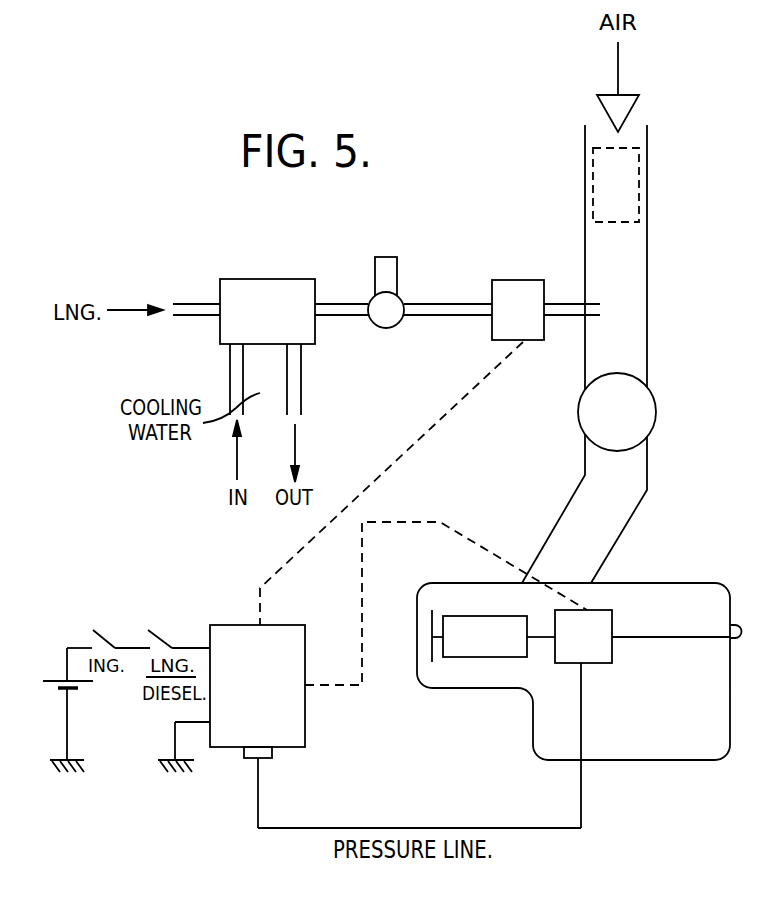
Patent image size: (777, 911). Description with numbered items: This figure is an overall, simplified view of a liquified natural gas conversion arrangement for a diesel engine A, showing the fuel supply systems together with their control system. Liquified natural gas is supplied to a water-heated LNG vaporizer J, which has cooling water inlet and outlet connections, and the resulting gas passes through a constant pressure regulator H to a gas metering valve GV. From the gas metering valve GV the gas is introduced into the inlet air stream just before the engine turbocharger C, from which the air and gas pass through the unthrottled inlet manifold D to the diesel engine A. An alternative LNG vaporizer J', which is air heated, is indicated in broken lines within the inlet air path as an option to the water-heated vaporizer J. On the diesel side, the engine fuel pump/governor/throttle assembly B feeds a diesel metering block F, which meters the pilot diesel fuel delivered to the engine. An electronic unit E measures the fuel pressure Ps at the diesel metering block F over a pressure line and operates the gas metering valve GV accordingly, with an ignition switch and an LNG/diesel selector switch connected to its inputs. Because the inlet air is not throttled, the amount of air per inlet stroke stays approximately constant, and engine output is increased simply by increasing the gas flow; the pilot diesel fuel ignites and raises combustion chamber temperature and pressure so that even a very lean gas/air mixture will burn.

The diesel engine A is at (573, 671).
The engine fuel pump/governor/throttle assembly B is at (479, 636).
The engine turbocharger C is at (617, 412).
The inlet manifold D is at (584, 354).
The electronic unit E is at (257, 691).
The diesel metering block F is at (583, 636).
The gas metering valve GV is at (518, 310).
The constant pressure regulator H is at (386, 292).
The LNG vaporizer J is at (267, 347).
The alternative LNG vaporizer J' is at (616, 185).
The fuel pressure Ps is at (595, 745).